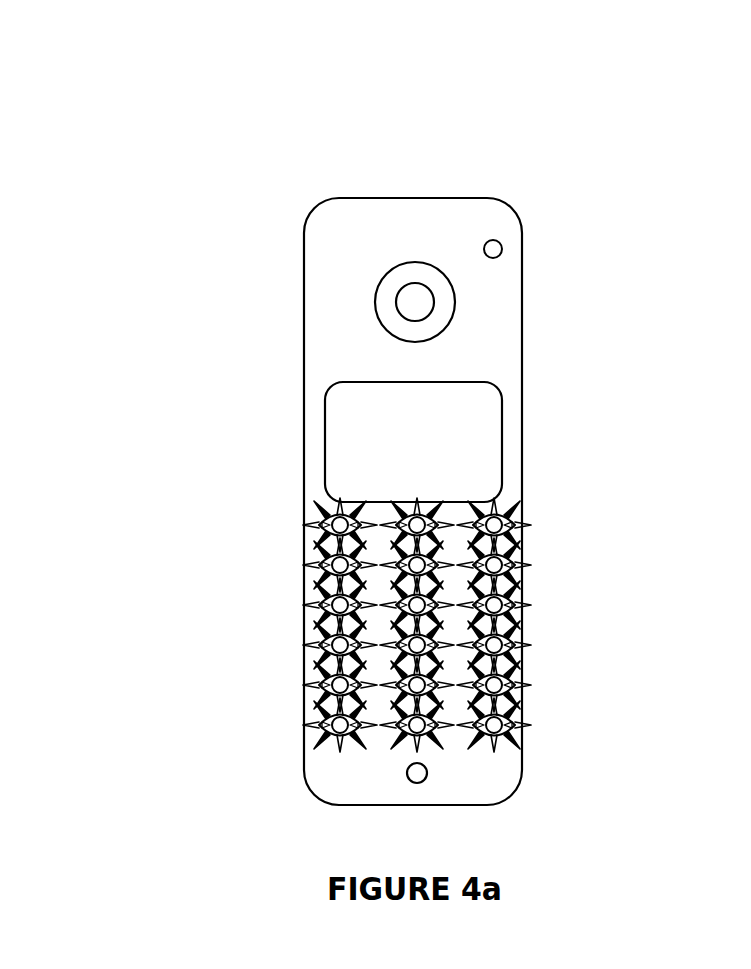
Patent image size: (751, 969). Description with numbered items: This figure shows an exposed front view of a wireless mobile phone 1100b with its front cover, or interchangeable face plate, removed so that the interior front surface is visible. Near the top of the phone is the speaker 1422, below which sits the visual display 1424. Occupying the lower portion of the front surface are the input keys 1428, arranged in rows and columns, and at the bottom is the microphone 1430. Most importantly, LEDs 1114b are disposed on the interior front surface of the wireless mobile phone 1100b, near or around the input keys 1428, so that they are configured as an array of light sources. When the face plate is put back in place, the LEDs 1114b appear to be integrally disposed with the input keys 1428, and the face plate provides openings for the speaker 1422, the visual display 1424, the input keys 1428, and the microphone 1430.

The wireless mobile phone 1100b is at (403, 193).
The speaker 1422 is at (458, 290).
The visual display 1424 is at (500, 435).
The LEDs 1114b is at (515, 578).
The input keys 1428 is at (503, 617).
The microphone 1430 is at (407, 766).